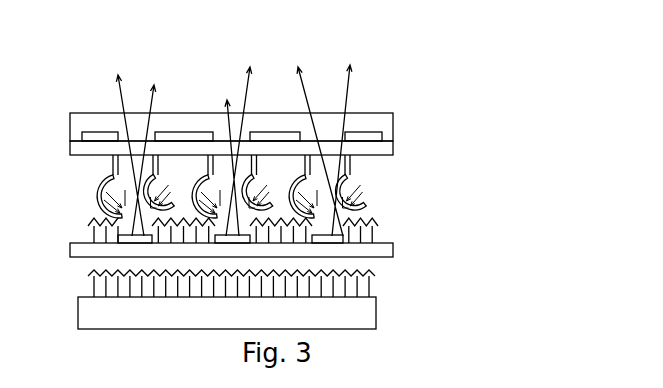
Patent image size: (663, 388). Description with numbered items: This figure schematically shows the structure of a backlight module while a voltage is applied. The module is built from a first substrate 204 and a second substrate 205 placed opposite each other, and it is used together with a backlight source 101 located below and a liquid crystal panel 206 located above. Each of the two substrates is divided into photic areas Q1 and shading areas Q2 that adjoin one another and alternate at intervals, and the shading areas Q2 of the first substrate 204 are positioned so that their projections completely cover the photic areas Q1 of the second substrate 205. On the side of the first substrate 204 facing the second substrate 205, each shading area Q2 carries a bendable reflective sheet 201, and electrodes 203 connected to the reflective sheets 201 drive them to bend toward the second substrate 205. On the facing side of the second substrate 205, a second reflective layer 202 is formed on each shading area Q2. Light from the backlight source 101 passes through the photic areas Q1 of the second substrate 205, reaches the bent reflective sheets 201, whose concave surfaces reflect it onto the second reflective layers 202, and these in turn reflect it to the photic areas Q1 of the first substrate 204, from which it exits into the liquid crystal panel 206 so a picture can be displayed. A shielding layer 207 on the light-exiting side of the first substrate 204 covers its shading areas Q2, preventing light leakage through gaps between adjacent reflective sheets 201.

The backlight source 101 is at (342, 293).
The reflective sheet 201 is at (360, 186).
The second reflective layer 202 is at (366, 200).
The electrode 203 is at (351, 162).
The first substrate 204 is at (370, 150).
The second substrate 205 is at (373, 250).
The liquid crystal panel 206 is at (385, 127).
The shielding layer 207 is at (192, 132).
The photic area Q1 is at (351, 219).
The shading area Q2 is at (127, 227).